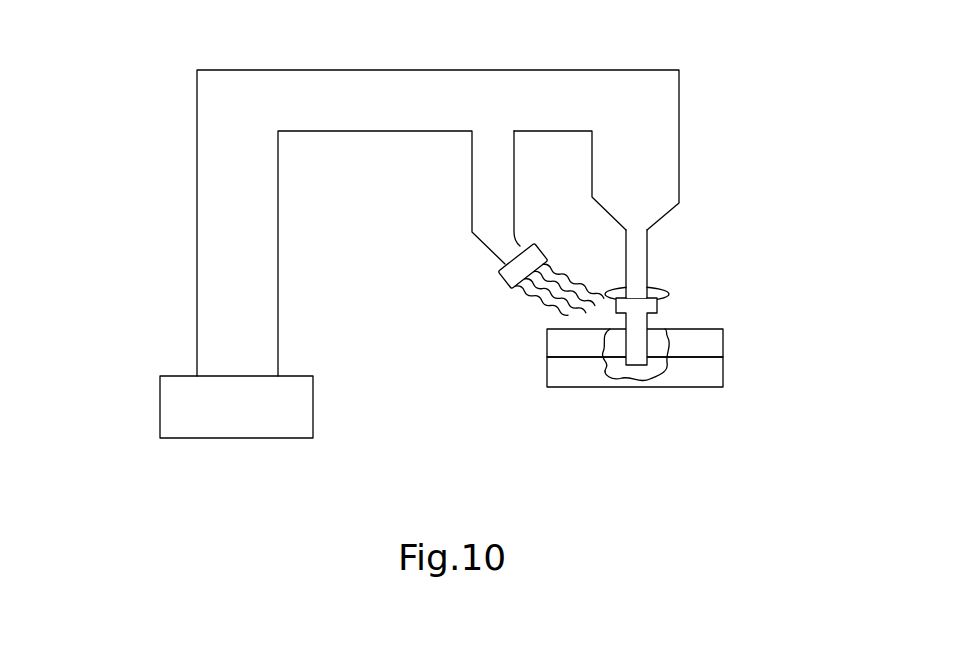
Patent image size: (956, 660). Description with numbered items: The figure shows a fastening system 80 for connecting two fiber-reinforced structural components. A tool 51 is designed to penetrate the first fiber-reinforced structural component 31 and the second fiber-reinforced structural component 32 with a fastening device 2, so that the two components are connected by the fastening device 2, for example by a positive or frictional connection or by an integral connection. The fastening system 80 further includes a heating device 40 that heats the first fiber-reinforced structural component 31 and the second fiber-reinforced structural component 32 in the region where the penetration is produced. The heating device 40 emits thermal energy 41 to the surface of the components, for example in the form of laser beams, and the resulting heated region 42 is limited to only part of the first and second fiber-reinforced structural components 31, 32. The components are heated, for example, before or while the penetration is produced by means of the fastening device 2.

The fastening system 80 is at (145, 93).
The heating device 40 is at (507, 272).
The thermal energy 41 is at (532, 321).
The heated region 42 is at (598, 371).
The fastening device 2 is at (640, 350).
The first fiber-reinforced structural component 31 is at (708, 343).
The second fiber-reinforced structural component 32 is at (715, 371).
The tool 51 is at (635, 250).